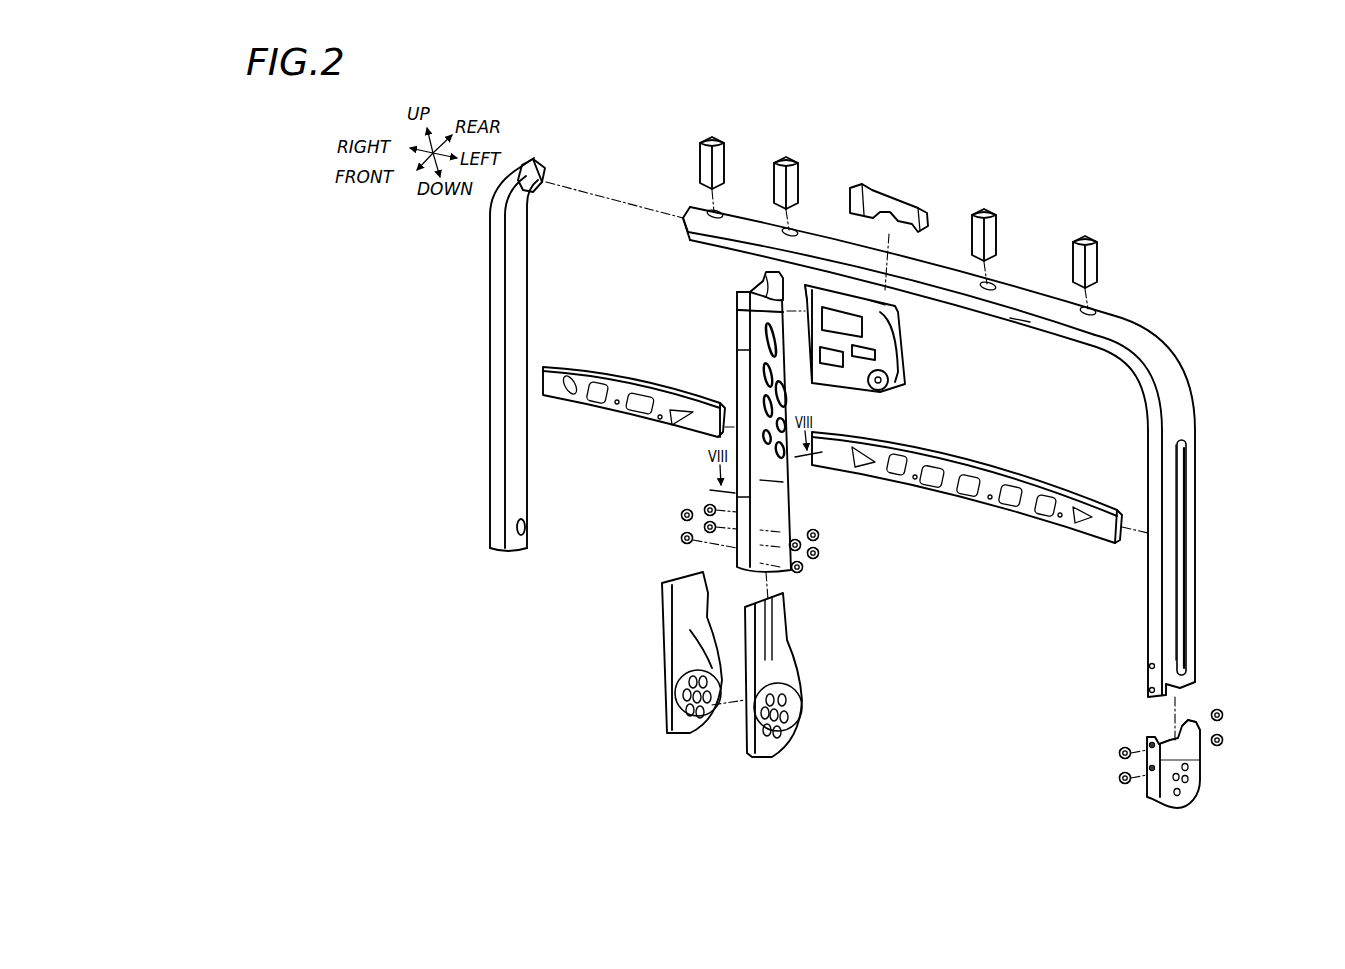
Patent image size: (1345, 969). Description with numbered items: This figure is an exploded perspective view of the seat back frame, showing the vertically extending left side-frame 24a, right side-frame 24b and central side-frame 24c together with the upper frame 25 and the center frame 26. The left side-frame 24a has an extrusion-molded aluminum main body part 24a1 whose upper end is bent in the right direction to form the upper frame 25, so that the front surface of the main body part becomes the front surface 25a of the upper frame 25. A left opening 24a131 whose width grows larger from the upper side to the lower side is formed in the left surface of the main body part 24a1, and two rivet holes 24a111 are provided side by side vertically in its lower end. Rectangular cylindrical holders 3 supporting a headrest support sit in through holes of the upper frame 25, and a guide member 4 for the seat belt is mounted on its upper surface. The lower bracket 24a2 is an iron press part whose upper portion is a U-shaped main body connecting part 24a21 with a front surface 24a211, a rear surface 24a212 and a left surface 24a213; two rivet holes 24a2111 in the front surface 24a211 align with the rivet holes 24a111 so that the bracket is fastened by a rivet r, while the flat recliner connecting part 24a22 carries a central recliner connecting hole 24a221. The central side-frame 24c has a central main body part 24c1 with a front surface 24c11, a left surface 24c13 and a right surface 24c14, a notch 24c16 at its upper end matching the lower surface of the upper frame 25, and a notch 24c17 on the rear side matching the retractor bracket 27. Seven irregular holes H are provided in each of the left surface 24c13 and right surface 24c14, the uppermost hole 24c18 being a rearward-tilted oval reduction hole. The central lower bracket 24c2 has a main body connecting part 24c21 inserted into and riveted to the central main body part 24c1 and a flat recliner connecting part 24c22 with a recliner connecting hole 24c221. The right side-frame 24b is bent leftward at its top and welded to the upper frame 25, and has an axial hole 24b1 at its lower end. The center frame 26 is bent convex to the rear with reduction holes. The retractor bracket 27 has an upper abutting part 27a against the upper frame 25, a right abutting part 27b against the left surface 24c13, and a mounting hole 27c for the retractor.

The rectangular cylindrical holder 3 is at (724, 160).
The guide member 4 is at (889, 188).
The left side-frame 24a is at (1194, 494).
The main body part 24a1 is at (1196, 530).
The left opening 24a131 is at (1182, 570).
The rivet hole 24a111 is at (1149, 667).
The lower bracket 24a2 is at (1197, 770).
The main body connecting part 24a21 is at (1188, 757).
The front surface 24a211 is at (1150, 758).
The rivet hole 24a2111 is at (1152, 745).
The rear surface 24a212 is at (1196, 738).
The left surface 24a213 is at (1170, 737).
The recliner connecting part 24a22 is at (1190, 795).
The recliner connecting hole 24a221 is at (1172, 799).
The right side-frame 24b is at (492, 318).
The axial hole 24b1 is at (527, 527).
The central side-frame 24c is at (737, 496).
The central main body part 24c1 is at (790, 507).
The front surface 24c11 is at (748, 357).
The left surface 24c13 is at (782, 482).
The right surface 24c14 is at (750, 290).
The notch 24c16 is at (757, 286).
The notch 24c17 is at (757, 312).
The hole 24c18 is at (768, 340).
The central lower bracket 24c2 is at (787, 633).
The main body connecting part 24c21 is at (787, 616).
The recliner connecting part 24c22 is at (790, 705).
The recliner connecting hole 24c221 is at (781, 735).
The upper frame 25 is at (940, 305).
The front surface 25a is at (1022, 318).
The center frame 26 is at (962, 498).
The retractor bracket 27 is at (900, 362).
The upper abutting part 27a is at (870, 298).
The right abutting part 27b is at (806, 300).
The mounting hole 27c is at (887, 386).
The rivet r is at (682, 538).
The irregular hole H is at (777, 450).